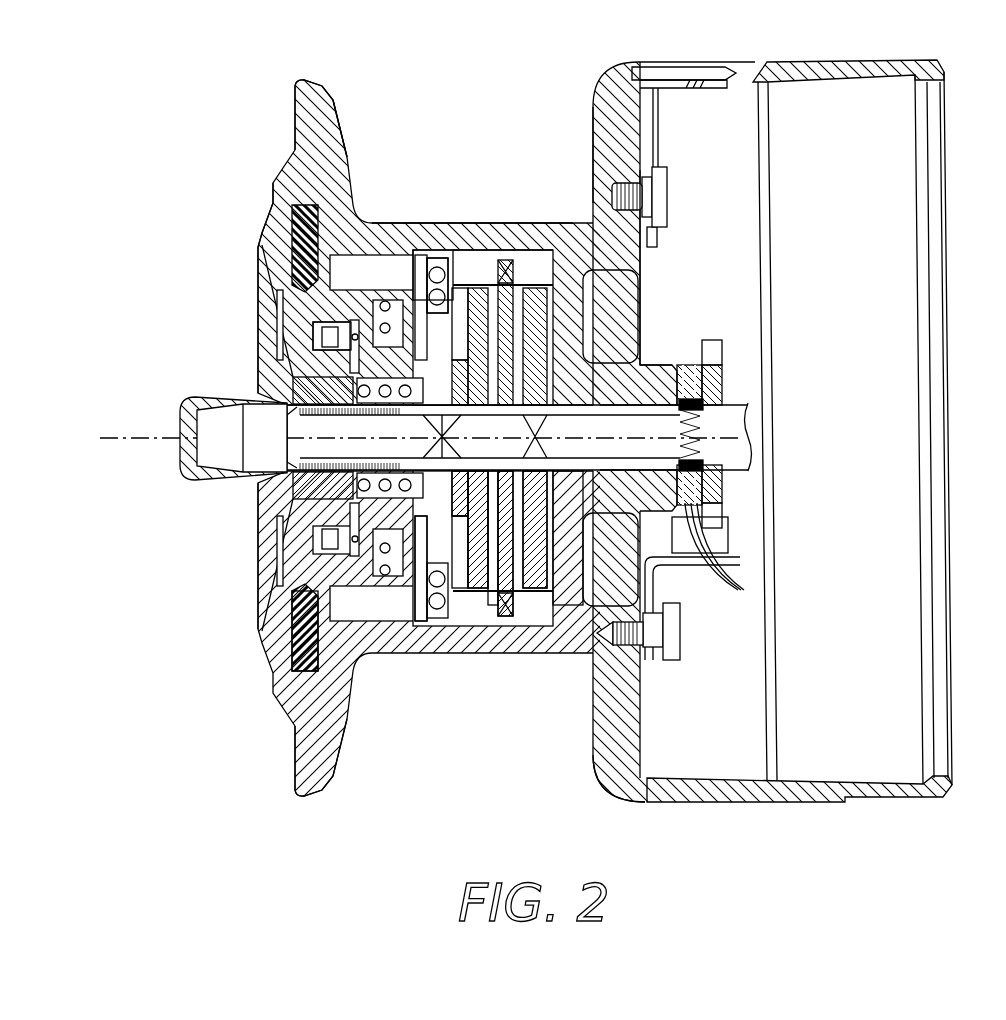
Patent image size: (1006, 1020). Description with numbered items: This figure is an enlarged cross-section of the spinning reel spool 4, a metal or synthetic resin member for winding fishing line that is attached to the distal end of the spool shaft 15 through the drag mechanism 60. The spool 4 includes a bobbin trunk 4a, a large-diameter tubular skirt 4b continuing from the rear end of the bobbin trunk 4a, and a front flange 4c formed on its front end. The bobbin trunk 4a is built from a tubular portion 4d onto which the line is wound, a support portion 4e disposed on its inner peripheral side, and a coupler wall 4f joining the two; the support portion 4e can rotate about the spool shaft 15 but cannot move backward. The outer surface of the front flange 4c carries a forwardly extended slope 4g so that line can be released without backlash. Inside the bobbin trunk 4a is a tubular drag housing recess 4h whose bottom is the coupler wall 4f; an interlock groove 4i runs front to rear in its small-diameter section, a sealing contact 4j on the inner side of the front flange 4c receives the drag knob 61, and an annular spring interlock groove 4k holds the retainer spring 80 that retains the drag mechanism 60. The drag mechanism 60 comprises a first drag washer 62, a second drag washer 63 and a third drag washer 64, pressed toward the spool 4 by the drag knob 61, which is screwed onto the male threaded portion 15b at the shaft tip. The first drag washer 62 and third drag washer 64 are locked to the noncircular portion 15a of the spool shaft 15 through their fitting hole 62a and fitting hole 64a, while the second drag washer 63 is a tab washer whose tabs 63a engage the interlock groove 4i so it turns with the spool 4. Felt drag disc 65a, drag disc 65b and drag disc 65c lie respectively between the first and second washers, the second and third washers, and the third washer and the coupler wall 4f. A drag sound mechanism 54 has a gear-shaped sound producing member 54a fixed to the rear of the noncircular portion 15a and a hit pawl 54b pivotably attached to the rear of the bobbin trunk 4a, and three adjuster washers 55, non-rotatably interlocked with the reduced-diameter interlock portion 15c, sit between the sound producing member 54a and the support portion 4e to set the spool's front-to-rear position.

The spool 4 is at (285, 100).
The bobbin trunk 4a is at (478, 218).
The skirt 4b is at (810, 60).
The front flange 4c is at (335, 95).
The tubular portion 4d is at (563, 210).
The support portion 4e is at (620, 357).
The coupler wall 4f is at (643, 280).
The slope 4g is at (315, 83).
The drag housing recess 4h is at (448, 260).
The interlock groove 4i is at (520, 225).
The sealing contact 4j is at (258, 223).
The spring interlock groove 4k is at (342, 760).
The spool shaft 15 is at (737, 395).
The noncircular portion 15a is at (625, 415).
The male threaded portion 15b is at (333, 390).
The interlock portion 15c is at (730, 480).
The drag sound mechanism 54 is at (712, 587).
The sound producing member 54a is at (722, 343).
The hit pawl 54b is at (700, 560).
The adjuster washers 55 is at (720, 560).
The drag mechanism 60 is at (475, 607).
The drag knob 61 is at (280, 632).
The first drag washer 62 is at (428, 597).
The fitting hole 62a is at (273, 680).
The second drag washer 63 is at (497, 618).
The tabs 63a is at (587, 263).
The third drag washer 64 is at (537, 596).
The fitting hole 64a is at (647, 800).
The drag disc 65a is at (460, 640).
The drag disc 65b is at (527, 600).
The drag disc 65c is at (565, 610).
The retainer spring 80 is at (433, 260).